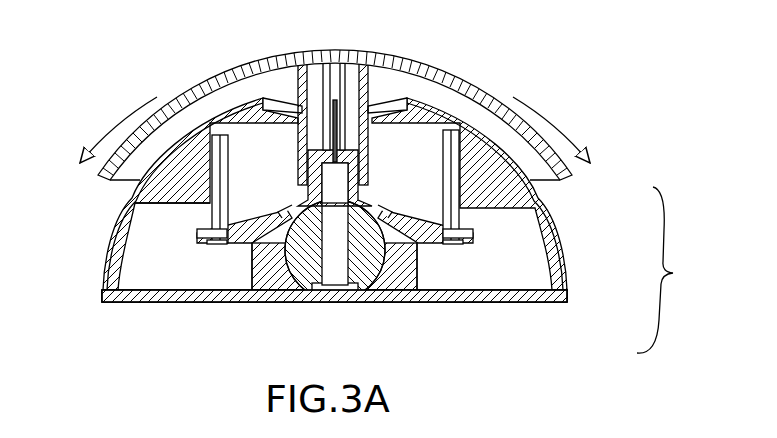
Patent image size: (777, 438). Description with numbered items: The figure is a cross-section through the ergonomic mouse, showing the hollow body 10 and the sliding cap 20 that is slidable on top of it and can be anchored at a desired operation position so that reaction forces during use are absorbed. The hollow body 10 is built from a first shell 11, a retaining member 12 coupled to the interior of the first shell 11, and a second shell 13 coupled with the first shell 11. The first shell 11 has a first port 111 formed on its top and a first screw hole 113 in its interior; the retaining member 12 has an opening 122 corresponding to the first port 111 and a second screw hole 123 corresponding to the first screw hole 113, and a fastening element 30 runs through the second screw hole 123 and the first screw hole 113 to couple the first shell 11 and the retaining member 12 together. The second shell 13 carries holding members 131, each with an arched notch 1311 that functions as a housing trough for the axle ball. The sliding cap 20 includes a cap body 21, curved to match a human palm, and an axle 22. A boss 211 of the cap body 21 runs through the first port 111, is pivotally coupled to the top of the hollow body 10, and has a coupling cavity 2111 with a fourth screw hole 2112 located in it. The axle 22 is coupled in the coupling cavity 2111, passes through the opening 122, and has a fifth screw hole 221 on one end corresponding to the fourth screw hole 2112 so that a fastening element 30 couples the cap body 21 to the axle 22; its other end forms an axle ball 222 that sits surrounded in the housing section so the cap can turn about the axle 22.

The hollow body 10 is at (673, 270).
The first shell 11 is at (355, 153).
The retaining member 12 is at (413, 266).
The second shell 13 is at (531, 304).
The sliding cap 20 is at (335, 96).
The cap body 21 is at (448, 80).
The axle 22 is at (316, 262).
The fastening element 30 is at (455, 247).
The first port 111 is at (381, 108).
The first screw hole 113 is at (131, 203).
The opening 122 is at (370, 204).
The second screw hole 123 is at (433, 246).
The holding member 131 is at (252, 266).
The boss 211 is at (334, 109).
The fifth screw hole 221 is at (300, 153).
The axle ball 222 is at (283, 215).
The arched notch 1311 is at (386, 280).
The coupling cavity 2111 is at (360, 194).
The fourth screw hole 2112 is at (300, 92).